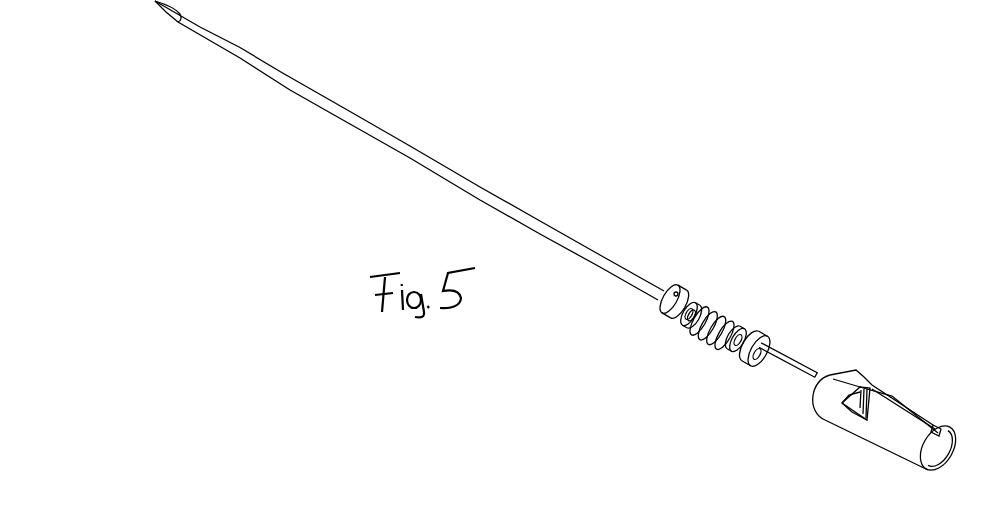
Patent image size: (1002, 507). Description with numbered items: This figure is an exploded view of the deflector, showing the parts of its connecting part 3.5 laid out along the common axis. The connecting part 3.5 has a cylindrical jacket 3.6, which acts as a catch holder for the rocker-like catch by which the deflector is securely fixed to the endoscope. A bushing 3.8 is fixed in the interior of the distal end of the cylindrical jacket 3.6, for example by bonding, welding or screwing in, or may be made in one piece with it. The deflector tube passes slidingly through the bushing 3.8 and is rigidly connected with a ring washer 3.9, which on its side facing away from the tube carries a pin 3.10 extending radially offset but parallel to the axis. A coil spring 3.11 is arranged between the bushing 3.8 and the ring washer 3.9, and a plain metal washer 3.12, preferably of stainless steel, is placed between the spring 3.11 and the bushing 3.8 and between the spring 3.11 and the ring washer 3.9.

The connecting part 3.5 is at (895, 386).
The cylindrical jacket 3.6 is at (902, 422).
The bushing 3.8 is at (658, 312).
The ring washer 3.9 is at (765, 339).
The pin 3.10 is at (795, 353).
The coil spring 3.11 is at (707, 348).
The washer 3.12 is at (681, 328).